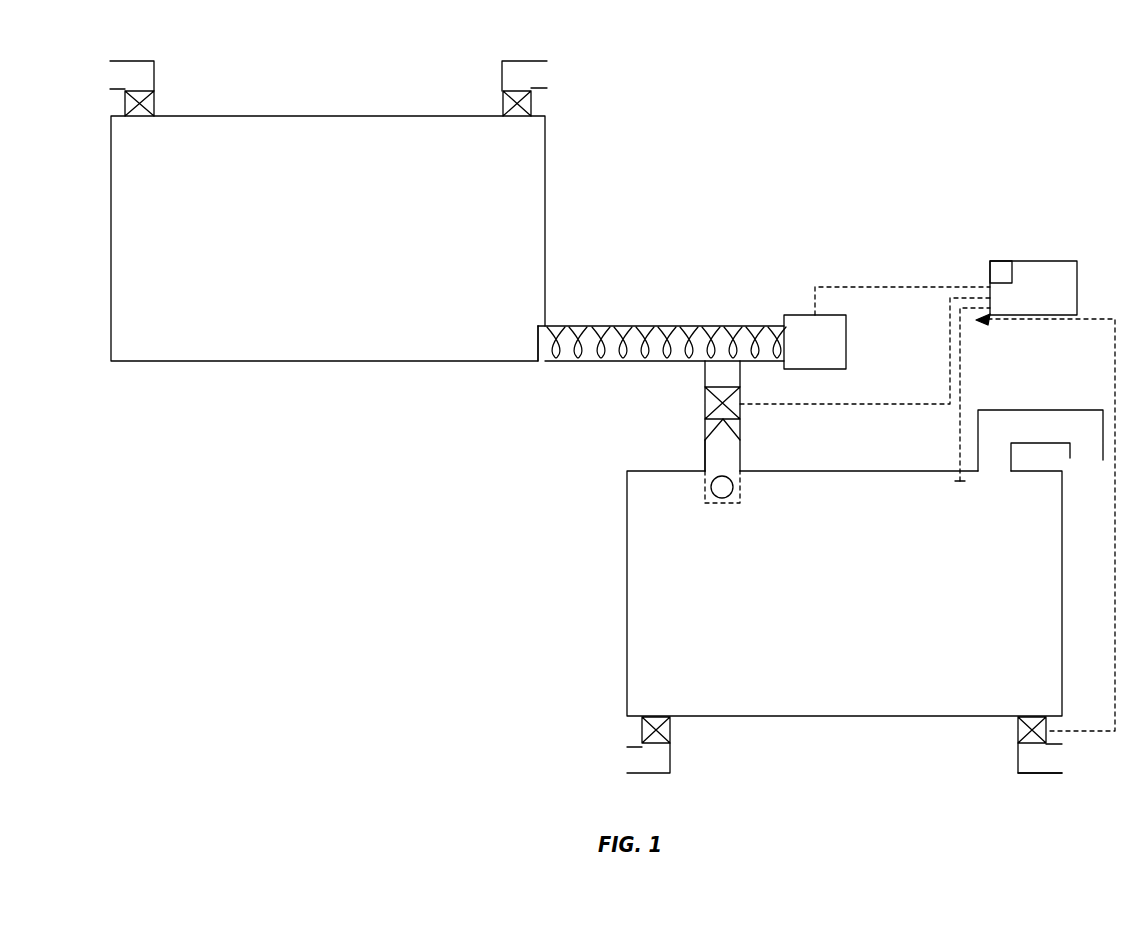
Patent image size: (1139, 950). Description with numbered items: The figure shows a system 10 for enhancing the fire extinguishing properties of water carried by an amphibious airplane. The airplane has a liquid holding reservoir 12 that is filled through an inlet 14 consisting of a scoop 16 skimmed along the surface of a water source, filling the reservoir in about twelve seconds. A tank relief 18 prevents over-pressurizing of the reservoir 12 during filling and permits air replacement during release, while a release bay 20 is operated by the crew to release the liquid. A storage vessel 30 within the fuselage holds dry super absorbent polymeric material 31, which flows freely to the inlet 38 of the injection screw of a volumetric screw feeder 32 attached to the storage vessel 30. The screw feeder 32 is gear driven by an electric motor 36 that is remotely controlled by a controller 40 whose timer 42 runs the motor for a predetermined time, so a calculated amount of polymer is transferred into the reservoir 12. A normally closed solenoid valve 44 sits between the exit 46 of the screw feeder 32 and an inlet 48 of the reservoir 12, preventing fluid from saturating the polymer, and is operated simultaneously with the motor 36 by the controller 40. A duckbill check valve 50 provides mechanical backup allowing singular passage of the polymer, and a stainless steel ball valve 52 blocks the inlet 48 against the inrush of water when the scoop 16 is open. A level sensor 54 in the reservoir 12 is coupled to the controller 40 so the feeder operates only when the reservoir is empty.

The system 10 is at (512, 533).
The liquid holding reservoir 12 is at (1062, 590).
The inlet 14 is at (1018, 730).
The scoop 16 is at (1033, 773).
The tank relief 18 is at (1060, 410).
The release bay 20 is at (670, 729).
The storage vessel 30 is at (545, 197).
The super absorbent polymeric material 31 is at (559, 255).
The volumetric screw feeder 32 is at (639, 325).
The electric motor 36 is at (847, 348).
The inlet 38 is at (537, 343).
The controller 40 is at (1077, 288).
The timer 42 is at (1000, 261).
The valve 44 is at (705, 400).
The exit 46 is at (705, 386).
The inlet 48 is at (705, 452).
The check valve 50 is at (705, 426).
The stainless steel ball valve 52 is at (745, 488).
The level sensor 54 is at (958, 480).